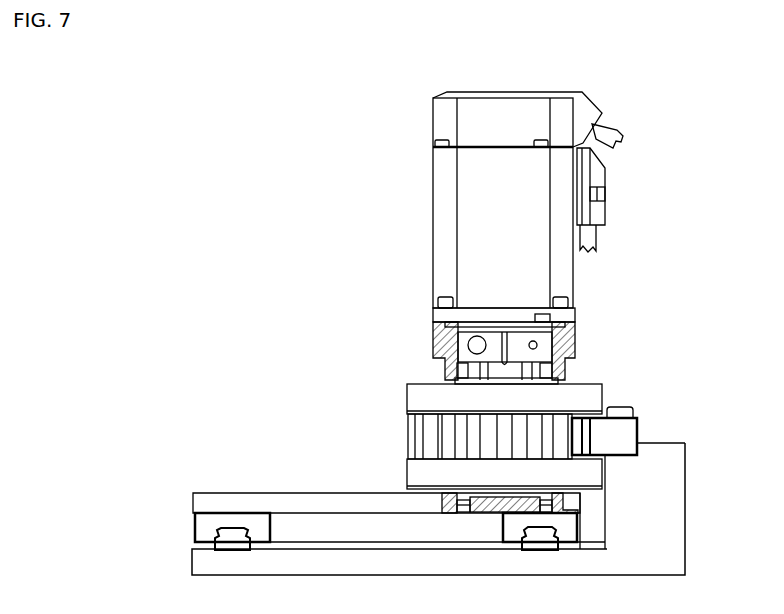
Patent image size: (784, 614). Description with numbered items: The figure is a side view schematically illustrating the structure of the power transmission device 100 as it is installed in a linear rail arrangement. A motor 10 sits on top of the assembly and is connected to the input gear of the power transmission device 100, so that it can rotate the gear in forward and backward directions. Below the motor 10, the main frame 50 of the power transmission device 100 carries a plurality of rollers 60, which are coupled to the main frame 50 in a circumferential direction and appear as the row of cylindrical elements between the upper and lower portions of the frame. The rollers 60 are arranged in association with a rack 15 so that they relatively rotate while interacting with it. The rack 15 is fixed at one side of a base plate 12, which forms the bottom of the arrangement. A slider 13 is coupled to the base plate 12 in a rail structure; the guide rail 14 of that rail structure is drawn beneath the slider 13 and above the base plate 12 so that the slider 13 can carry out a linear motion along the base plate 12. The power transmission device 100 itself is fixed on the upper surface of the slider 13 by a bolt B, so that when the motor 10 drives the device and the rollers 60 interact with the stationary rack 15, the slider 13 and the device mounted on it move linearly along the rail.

The power transmission device 100 is at (619, 90).
The motor 10 is at (567, 268).
The base plate 12 is at (668, 563).
The slider 13 is at (572, 505).
The guide rail 14 is at (530, 543).
The rack 15 is at (578, 435).
The main frame 50 is at (402, 403).
The rollers 60 is at (428, 433).
The bolt B is at (465, 513).